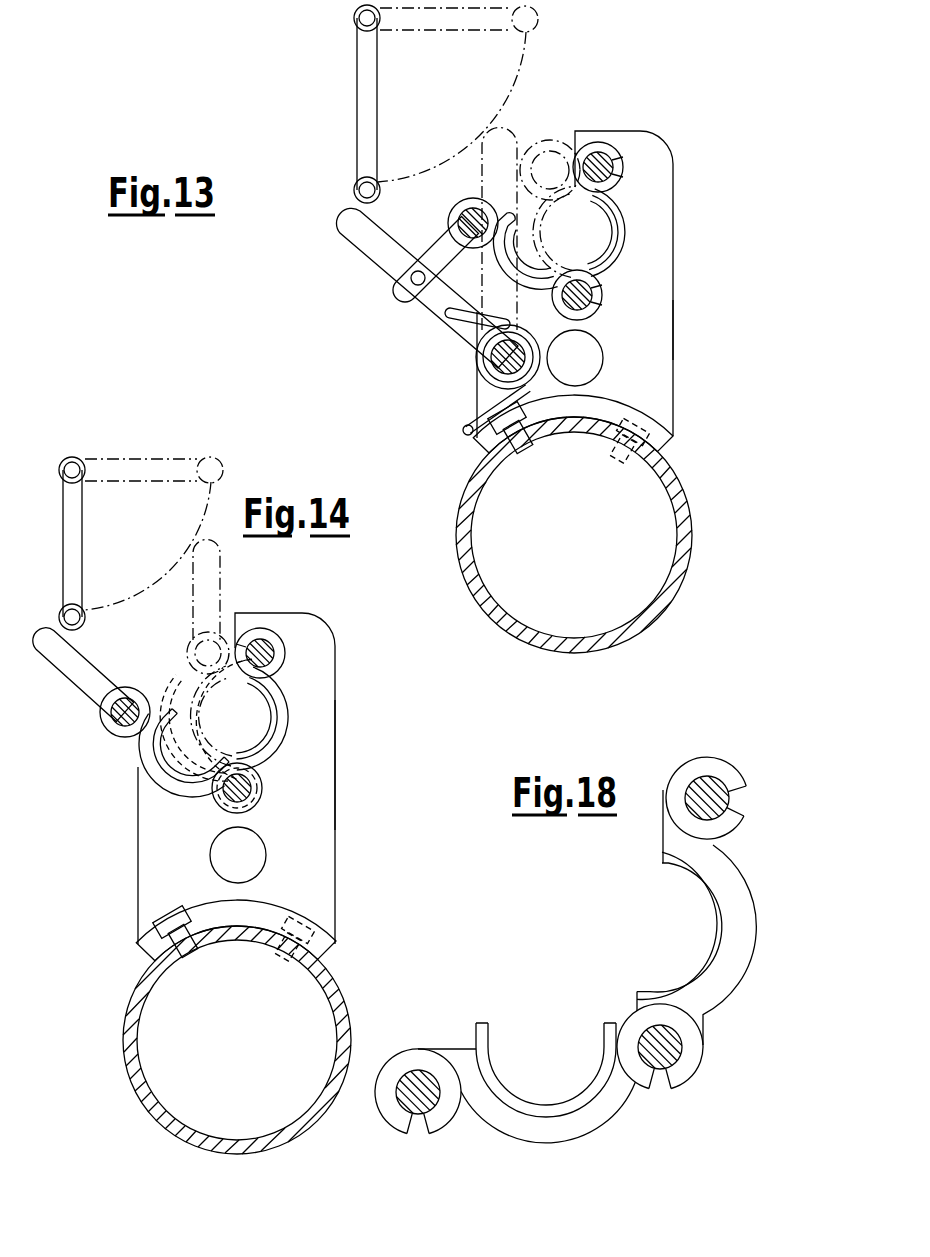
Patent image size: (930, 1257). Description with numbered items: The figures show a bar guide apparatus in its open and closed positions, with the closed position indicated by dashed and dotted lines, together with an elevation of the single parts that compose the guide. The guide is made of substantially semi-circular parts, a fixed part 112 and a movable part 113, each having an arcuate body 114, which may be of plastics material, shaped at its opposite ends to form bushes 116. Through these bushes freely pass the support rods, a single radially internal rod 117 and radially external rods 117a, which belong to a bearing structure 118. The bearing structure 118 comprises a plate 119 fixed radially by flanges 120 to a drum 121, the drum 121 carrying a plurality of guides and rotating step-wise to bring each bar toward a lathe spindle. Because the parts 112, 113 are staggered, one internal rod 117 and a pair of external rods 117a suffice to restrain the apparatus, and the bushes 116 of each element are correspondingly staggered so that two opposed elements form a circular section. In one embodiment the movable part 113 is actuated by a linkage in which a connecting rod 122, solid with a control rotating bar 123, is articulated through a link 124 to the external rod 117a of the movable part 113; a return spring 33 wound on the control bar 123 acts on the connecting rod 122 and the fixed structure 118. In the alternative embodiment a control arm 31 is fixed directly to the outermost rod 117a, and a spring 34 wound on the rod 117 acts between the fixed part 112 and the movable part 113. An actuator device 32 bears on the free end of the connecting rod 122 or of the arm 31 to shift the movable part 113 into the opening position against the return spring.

In FIG. 14, the control arm 31 is at (86, 680).
In FIG. 13, the actuator device 32 is at (360, 82).
In FIG. 14, the actuator device 32 is at (82, 531).
In FIG. 13, the return spring 33 is at (548, 353).
In FIG. 14, the return spring 34 is at (293, 679).
In FIG. 18, the fixed part 112 is at (673, 900).
In FIG. 18, the movable part 113 is at (463, 1037).
In FIG. 13, the body 114 is at (622, 232).
In FIG. 14, the body 114 is at (282, 696).
In FIG. 18, the body 114 is at (742, 920).
In FIG. 13, the bushes 116 is at (618, 180).
In FIG. 14, the bushes 116 is at (284, 648).
In FIG. 18, the bushes 116 is at (683, 775).
In FIG. 13, the radially internal support rod 117 is at (600, 294).
In FIG. 14, the radially internal support rod 117 is at (250, 792).
In FIG. 18, the radially internal support rod 117 is at (662, 1036).
In FIG. 13, the radially external support rod 117a is at (466, 216).
In FIG. 14, the radially external support rod 117a is at (262, 642).
In FIG. 18, the radially external support rod 117a is at (708, 786).
In FIG. 13, the bearing structure 118 is at (660, 388).
In FIG. 14, the bearing structure 118 is at (313, 857).
In FIG. 13, the plate 119 is at (665, 358).
In FIG. 14, the plate 119 is at (322, 730).
In FIG. 13, the flanges 120 is at (668, 432).
In FIG. 14, the flanges 120 is at (336, 955).
In FIG. 13, the drum 121 is at (688, 552).
In FIG. 14, the drum 121 is at (131, 1031).
In FIG. 13, the connecting rod 122 is at (372, 238).
In FIG. 13, the control rotating bar 123 is at (497, 357).
In FIG. 13, the link 124 is at (410, 268).